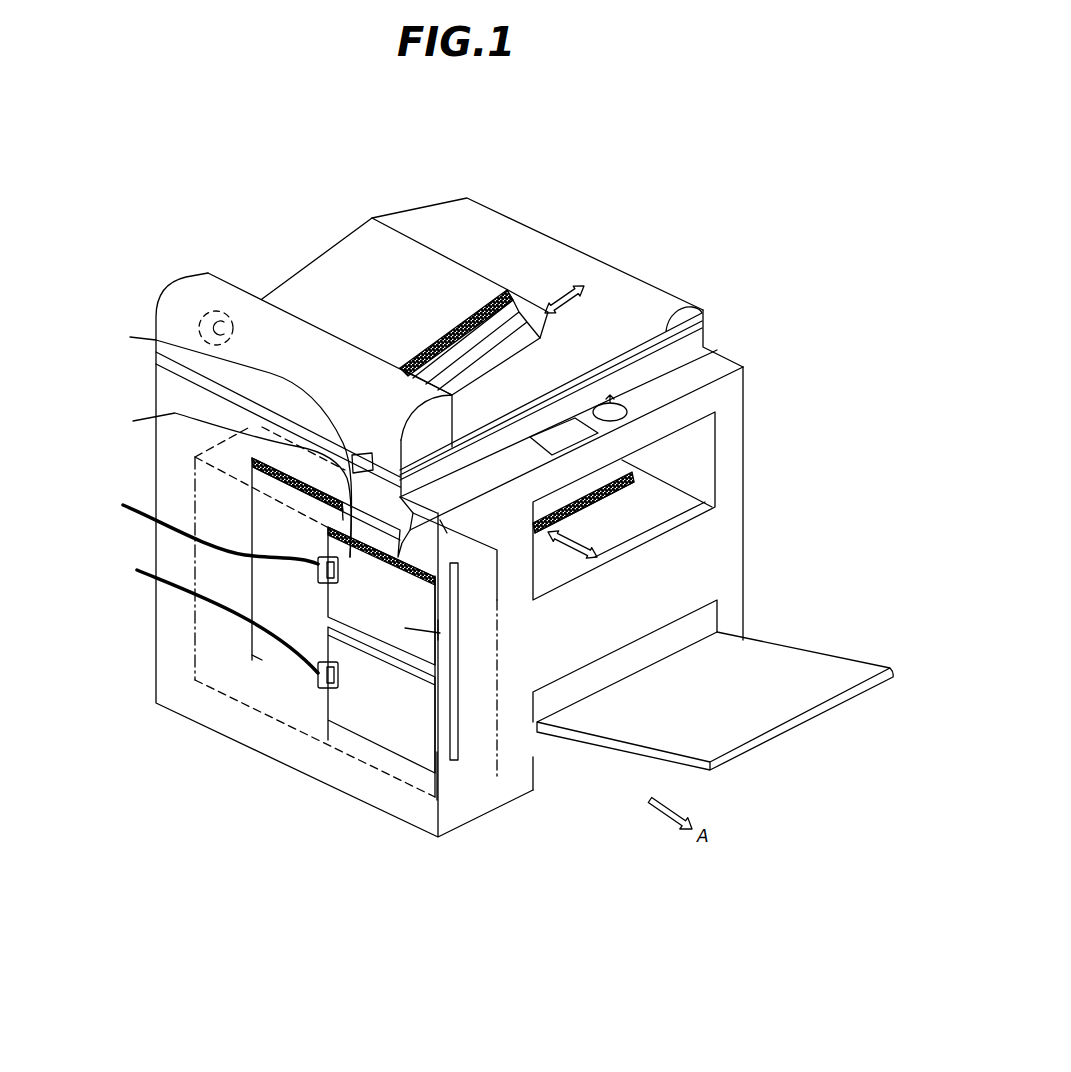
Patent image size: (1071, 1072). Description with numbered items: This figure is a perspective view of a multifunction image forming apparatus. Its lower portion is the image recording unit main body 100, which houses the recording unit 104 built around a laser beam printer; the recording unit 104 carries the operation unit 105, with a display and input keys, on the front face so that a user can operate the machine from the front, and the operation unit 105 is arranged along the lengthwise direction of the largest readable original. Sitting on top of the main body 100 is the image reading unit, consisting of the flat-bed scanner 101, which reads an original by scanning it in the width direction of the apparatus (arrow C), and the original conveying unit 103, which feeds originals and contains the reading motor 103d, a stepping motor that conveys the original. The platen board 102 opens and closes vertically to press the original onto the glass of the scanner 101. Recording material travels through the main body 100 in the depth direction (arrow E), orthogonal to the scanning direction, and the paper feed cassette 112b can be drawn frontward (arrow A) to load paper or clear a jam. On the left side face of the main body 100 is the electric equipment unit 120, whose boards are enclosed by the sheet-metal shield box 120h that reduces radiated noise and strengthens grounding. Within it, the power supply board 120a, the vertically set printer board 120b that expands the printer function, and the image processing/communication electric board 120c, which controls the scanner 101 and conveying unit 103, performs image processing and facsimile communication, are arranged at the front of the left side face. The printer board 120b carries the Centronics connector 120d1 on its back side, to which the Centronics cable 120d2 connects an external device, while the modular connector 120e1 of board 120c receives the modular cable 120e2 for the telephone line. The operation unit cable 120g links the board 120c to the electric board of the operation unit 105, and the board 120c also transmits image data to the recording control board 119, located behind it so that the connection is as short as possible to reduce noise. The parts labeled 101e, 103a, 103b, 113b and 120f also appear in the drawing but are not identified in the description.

The image recording unit main body 100 is at (580, 197).
The flat-bed scanner 101 is at (703, 310).
The upper cover 101e is at (224, 441).
The platen board 102 is at (620, 297).
The original conveying unit 103 is at (303, 337).
The document tray 103a is at (363, 253).
The document stack 103b is at (508, 330).
The reading motor 103d is at (200, 320).
The recording unit 104 is at (648, 507).
The operation unit 105 is at (688, 380).
The paper feed cassette 112b is at (563, 765).
The sheet discharge tray 113b is at (755, 735).
The recording control board 119 is at (456, 775).
The electric equipment unit 120 is at (415, 800).
The power supply board 120a is at (268, 655).
The printer board 120b is at (357, 718).
The image processing/communication electric board 120c is at (440, 630).
The external interface connector 120d1 is at (292, 758).
The Centronics cable 120d2 is at (317, 678).
The modular connector 120e1 is at (313, 570).
The modular cable 120e2 is at (318, 577).
The door hinge 120f is at (219, 485).
The operation unit cable 120g is at (447, 533).
The shield box 120h is at (395, 767).